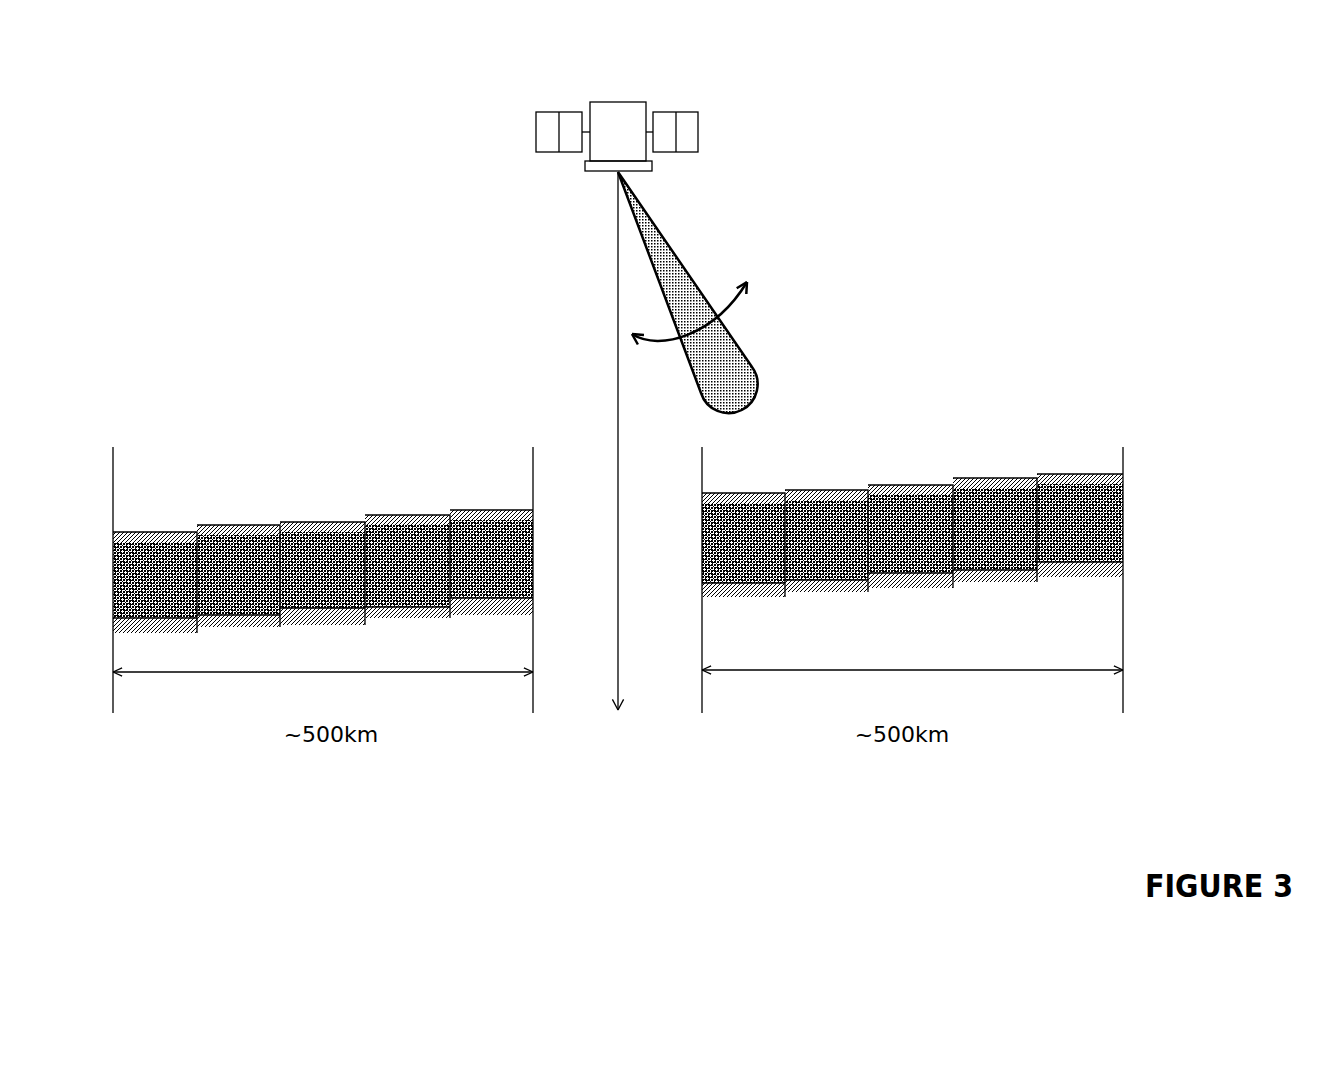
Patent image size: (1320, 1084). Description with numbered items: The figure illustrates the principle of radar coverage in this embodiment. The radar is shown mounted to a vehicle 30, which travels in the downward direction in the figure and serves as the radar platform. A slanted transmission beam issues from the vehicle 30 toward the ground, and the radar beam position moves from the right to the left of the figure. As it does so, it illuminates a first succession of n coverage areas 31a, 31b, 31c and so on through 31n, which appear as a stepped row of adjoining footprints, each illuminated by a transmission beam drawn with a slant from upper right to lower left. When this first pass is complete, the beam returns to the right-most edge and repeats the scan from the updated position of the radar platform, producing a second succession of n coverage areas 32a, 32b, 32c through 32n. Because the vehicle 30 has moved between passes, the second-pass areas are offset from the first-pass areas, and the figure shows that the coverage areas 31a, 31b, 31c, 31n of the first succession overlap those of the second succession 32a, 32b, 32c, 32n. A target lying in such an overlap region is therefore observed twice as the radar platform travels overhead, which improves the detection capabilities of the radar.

The vehicle 30 is at (707, 126).
The coverage area 31n is at (163, 531).
The coverage area 32n is at (172, 633).
The coverage area 31a is at (1069, 474).
The coverage area 31b is at (985, 478).
The coverage area 31c is at (899, 486).
The coverage area 32a is at (1079, 577).
The coverage area 32b is at (996, 582).
The coverage area 32c is at (909, 588).